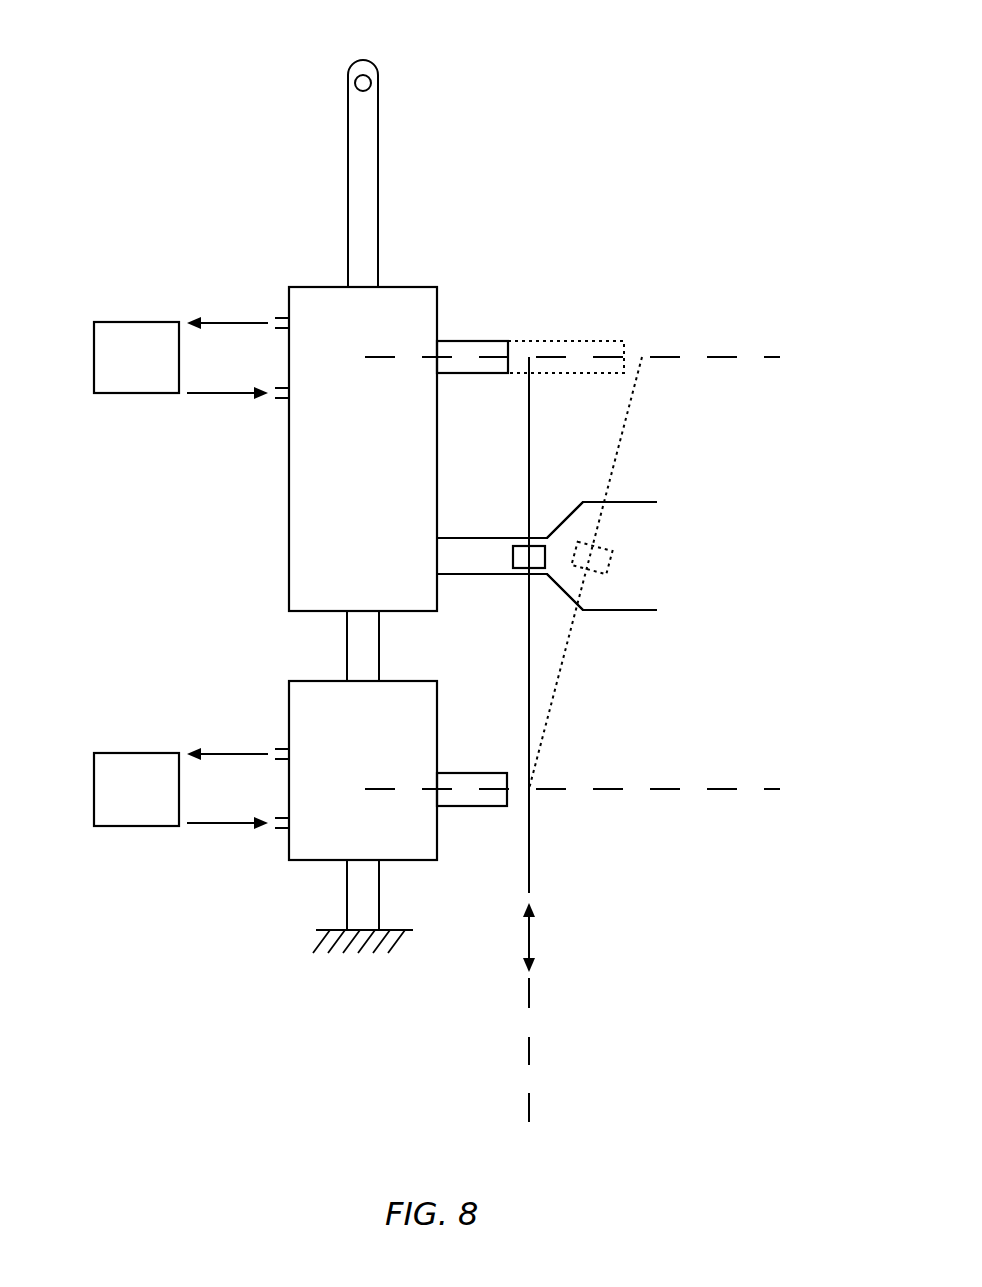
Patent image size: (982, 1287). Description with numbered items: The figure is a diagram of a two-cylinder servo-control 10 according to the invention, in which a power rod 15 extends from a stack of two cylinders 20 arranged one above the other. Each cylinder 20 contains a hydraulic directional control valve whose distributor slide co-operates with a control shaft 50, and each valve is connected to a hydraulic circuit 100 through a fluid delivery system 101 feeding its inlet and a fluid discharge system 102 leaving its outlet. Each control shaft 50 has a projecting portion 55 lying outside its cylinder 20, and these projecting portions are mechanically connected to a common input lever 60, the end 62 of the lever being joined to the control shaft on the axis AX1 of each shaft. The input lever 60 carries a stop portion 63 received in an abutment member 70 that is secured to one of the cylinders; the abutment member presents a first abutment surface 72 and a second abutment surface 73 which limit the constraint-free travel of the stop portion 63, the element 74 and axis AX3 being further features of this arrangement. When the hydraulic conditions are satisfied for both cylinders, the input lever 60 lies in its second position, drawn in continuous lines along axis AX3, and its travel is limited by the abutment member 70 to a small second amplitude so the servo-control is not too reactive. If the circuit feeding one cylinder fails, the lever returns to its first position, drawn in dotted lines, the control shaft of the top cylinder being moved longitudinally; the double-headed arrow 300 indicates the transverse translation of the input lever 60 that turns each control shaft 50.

The servo-control 10 is at (238, 64).
The power rod 15 is at (378, 112).
The cylinder 20 is at (289, 532).
The control shaft 50 is at (492, 357).
The projecting portion 55 is at (472, 341).
The input lever 60 is at (528, 389).
The end 62 is at (530, 368).
The stop portion 63 is at (520, 561).
The abutment member 70 is at (635, 485).
The first abutment surface 72 is at (632, 611).
The second abutment surface 73 is at (500, 538).
The slot 74 is at (560, 590).
The hydraulic circuit 100 is at (94, 358).
The fluid delivery system 101 is at (227, 394).
The fluid discharge system 102 is at (227, 322).
The double-headed arrow 300 is at (531, 937).
The first axis AX1 is at (772, 358).
The third axis AX3 is at (530, 1048).